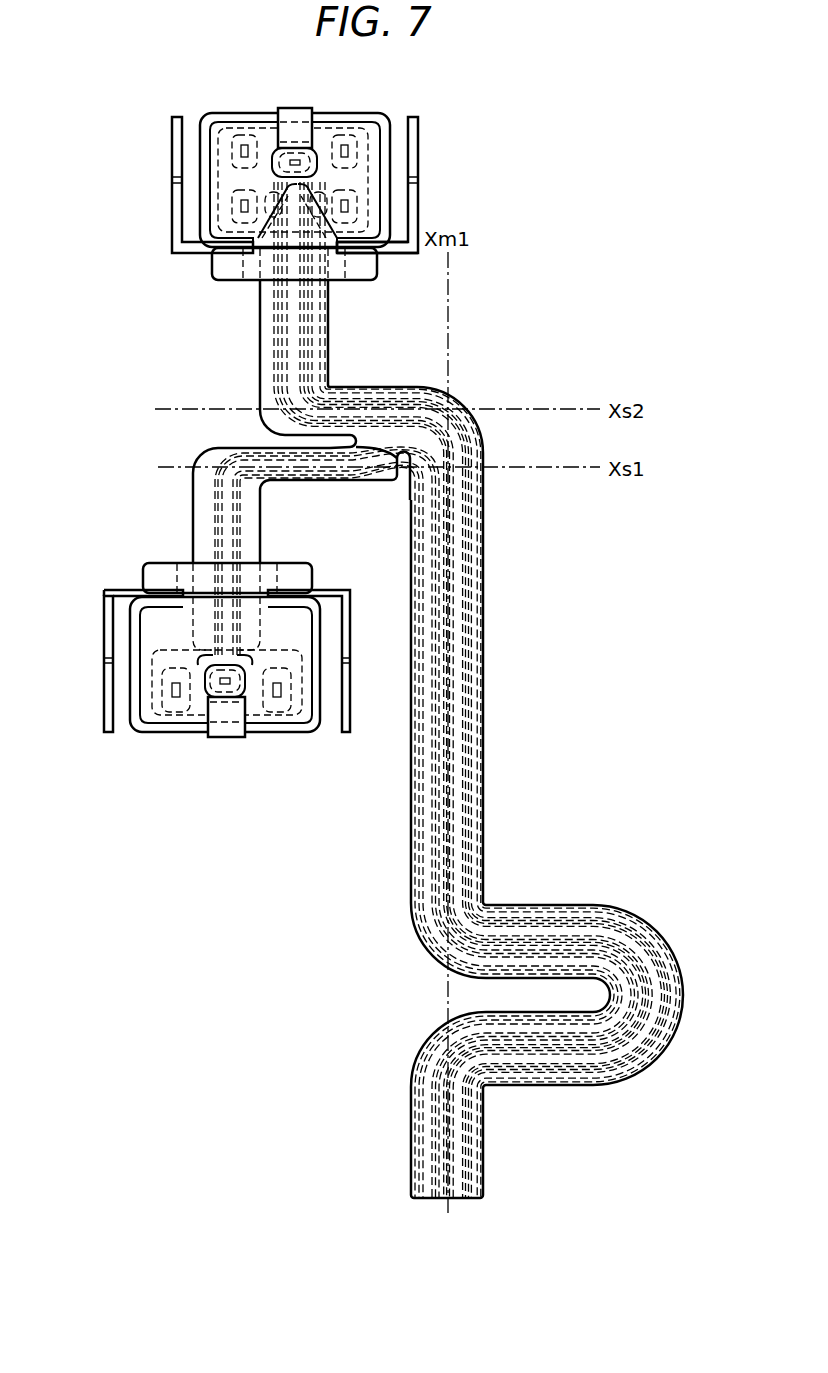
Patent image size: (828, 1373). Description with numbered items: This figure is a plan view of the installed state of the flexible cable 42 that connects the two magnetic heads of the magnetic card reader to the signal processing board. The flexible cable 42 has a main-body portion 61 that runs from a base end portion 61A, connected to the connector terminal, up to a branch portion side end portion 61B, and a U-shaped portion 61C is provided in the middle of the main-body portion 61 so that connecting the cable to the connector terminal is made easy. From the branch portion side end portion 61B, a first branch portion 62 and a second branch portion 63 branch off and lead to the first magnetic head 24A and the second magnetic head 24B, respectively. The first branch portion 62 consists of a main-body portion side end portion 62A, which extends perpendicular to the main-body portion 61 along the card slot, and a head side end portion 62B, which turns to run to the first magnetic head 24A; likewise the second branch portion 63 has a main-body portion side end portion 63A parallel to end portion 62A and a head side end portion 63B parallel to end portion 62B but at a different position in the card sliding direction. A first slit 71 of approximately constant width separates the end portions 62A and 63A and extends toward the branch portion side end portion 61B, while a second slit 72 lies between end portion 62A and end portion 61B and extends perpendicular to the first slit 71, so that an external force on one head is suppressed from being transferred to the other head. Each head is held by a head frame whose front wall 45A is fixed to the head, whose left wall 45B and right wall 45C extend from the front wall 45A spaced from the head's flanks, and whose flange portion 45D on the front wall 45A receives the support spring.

The first magnetic head 24A is at (147, 717).
The second magnetic head 24B is at (373, 132).
The flexible cable 42 is at (553, 683).
The front wall 45A is at (383, 256).
The left wall 45B is at (420, 118).
The right wall 45C is at (175, 118).
The flange portion 45D is at (223, 268).
The main-body portion 61 is at (536, 792).
The base end portion 61A is at (460, 1162).
The branch portion side end portion 61B is at (485, 465).
The U-shaped portion 61C is at (660, 975).
The first branch portion 62 is at (216, 492).
The main-body portion side end portion 62A is at (283, 457).
The head side end portion 62B is at (203, 506).
The second branch portion 63 is at (353, 357).
The main-body portion side end portion 63A is at (338, 387).
The head side end portion 63B is at (320, 322).
The first slit 71 is at (322, 437).
The second slit 72 is at (403, 467).